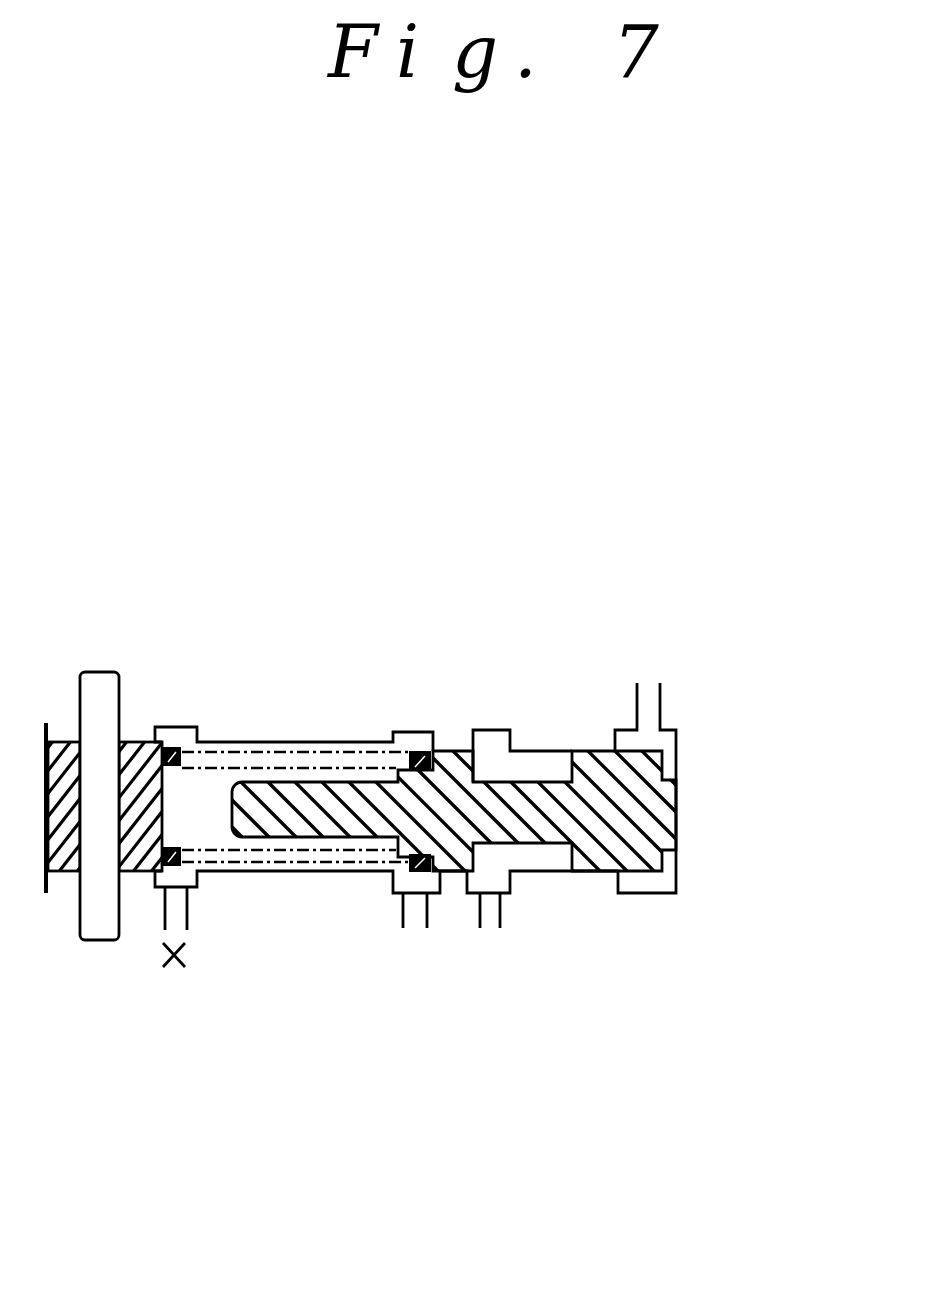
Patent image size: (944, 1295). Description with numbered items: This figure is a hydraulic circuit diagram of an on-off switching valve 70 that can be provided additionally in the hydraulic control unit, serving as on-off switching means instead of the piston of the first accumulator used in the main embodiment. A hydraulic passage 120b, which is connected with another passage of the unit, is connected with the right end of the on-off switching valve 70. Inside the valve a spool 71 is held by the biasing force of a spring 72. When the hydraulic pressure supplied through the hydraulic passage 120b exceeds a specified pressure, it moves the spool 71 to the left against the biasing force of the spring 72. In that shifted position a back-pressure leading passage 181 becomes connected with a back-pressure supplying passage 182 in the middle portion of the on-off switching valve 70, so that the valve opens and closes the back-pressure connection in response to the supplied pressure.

The on-off switching valve 70 is at (258, 656).
The spool 71 is at (603, 797).
The spring 72 is at (417, 750).
The hydraulic passage 120b is at (856, 587).
The back-pressure leading passage 181 is at (490, 955).
The back-pressure supplying passage 182 is at (415, 925).